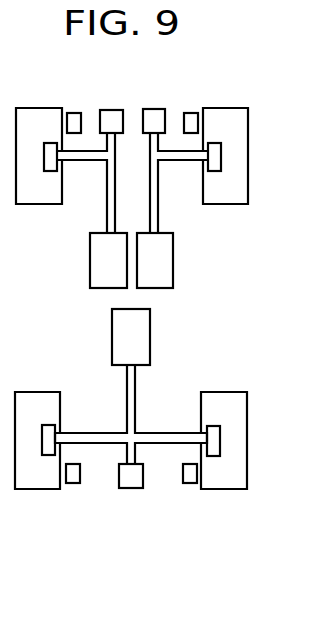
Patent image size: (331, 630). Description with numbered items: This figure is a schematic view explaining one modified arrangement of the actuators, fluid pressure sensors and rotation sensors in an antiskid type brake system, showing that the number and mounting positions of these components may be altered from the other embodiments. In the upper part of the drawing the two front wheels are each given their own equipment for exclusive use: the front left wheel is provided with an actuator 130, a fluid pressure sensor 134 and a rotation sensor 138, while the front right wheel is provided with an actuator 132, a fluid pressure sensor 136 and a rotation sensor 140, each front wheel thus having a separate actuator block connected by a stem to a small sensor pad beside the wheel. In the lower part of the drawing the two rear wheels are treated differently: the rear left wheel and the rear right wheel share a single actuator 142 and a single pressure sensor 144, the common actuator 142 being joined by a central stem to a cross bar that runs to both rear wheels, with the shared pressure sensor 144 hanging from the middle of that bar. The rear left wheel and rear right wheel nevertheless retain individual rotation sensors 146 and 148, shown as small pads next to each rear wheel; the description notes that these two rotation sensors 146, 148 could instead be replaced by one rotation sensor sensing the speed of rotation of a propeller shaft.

The actuator 130 is at (90, 261).
The actuator 132 is at (173, 263).
The fluid pressure sensor 134 is at (110, 110).
The fluid pressure sensor 136 is at (153, 109).
The rotation sensor 138 is at (72, 113).
The rotation sensor 140 is at (191, 113).
The actuator 142 is at (151, 342).
The pressure sensor 144 is at (130, 489).
The rotation sensor 146 is at (70, 484).
The rotation sensor 148 is at (190, 484).